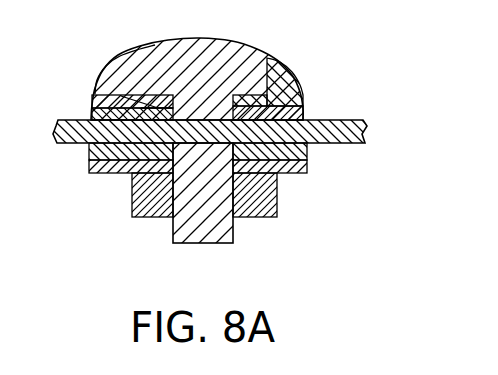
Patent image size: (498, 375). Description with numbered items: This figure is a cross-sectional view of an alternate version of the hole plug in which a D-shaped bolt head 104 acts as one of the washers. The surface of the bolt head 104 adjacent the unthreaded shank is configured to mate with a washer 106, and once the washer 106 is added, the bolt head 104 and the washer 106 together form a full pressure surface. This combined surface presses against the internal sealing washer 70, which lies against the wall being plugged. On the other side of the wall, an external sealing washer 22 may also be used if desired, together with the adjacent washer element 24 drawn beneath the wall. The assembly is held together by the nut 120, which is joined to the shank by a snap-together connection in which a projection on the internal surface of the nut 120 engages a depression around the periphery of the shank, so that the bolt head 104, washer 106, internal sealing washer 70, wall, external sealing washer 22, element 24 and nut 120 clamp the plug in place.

The D-shaped bolt head 104 is at (224, 42).
The washer 106 is at (302, 82).
The internal sealing washer 70 is at (302, 117).
The washer 24 is at (308, 156).
The external sealing washer 22 is at (308, 173).
The nut 120 is at (277, 216).